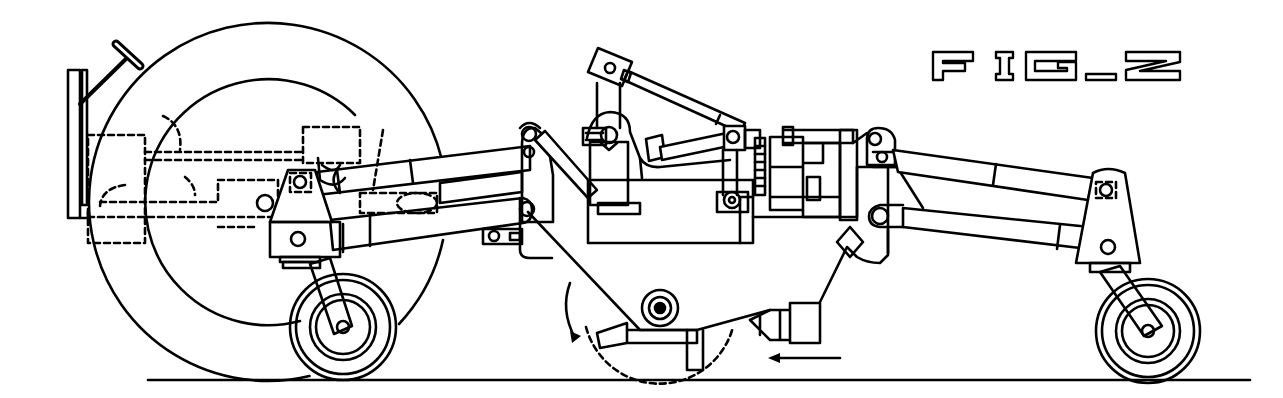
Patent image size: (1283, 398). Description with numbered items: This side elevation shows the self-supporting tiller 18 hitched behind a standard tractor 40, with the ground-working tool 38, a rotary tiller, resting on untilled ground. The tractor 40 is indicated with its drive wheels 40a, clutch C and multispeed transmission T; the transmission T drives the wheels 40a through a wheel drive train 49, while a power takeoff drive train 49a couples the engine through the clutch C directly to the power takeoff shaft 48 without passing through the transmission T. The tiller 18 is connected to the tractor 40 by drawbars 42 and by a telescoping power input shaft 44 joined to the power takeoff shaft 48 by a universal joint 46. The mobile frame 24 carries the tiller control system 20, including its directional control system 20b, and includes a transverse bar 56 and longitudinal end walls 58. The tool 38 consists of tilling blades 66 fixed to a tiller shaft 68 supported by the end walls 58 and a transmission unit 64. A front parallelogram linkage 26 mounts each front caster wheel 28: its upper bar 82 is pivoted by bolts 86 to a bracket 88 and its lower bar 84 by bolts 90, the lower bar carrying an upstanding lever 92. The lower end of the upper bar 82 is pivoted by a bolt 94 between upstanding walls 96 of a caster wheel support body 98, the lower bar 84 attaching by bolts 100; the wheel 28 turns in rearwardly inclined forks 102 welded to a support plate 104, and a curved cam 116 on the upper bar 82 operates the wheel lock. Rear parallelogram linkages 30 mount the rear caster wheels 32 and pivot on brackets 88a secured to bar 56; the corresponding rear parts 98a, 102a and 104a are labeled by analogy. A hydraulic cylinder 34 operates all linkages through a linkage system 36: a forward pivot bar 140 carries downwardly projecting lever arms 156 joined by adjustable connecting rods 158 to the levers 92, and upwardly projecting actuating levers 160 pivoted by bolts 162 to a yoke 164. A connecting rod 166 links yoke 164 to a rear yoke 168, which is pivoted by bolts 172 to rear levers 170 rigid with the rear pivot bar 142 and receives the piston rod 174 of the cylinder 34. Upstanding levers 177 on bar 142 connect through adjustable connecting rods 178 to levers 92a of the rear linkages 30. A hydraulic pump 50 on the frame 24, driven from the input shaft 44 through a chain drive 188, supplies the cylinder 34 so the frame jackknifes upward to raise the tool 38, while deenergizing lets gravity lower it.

The self-supporting tiller 18 is at (878, 127).
The tiller control system 20 is at (690, 136).
The directional control system 20b is at (334, 160).
The mobile frame 24 is at (524, 259).
The front parallelogram linkages 26 is at (462, 148).
The front caster wheels 28 is at (302, 350).
The rear parallelogram linkages 30 is at (1021, 177).
The rear caster wheels 32 is at (1190, 309).
The hydraulic cylinder 34 is at (586, 153).
The linkage system 36 is at (592, 57).
The ground-working tool 38 is at (700, 370).
The tractor 40 is at (76, 70).
The drive wheels 40a is at (303, 64).
The drawbars 42 is at (113, 186).
The power input shaft 44 is at (462, 238).
The universal joint 46 is at (420, 192).
The power takeoff shaft 48 is at (385, 149).
The wheel drive train 49 is at (173, 181).
The power takeoff drive train 49a is at (150, 123).
The hydraulic pump 50 is at (819, 129).
The transverse bar 56 is at (845, 251).
The end walls 58 is at (753, 299).
The transmission unit 64 is at (822, 327).
The tilling blades 66 is at (664, 363).
The tiller shaft 68 is at (662, 304).
The upper bar 82 is at (477, 153).
The lower bar 84 is at (410, 236).
The bolts 86 is at (524, 129).
The bracket 88 is at (552, 193).
The brackets 88a is at (878, 192).
The bolts 90 is at (547, 228).
The lever 92 is at (498, 183).
The levers 92a is at (897, 139).
The bolt 94 is at (300, 176).
The upstanding walls 96 is at (275, 231).
The front caster wheel support body 98 is at (290, 240).
The rear caster plate 98a is at (1142, 247).
The bolts 100 is at (290, 255).
The forks 102 is at (303, 297).
The rear caster fork 102a is at (1124, 299).
The horizontal support plate 104 is at (293, 263).
The rear caster swivel 104a is at (1092, 272).
The curved cam 116 is at (352, 244).
The forward pivot bar 140 is at (640, 165).
The rear pivot bar 142 is at (728, 212).
The lever arms 156 is at (623, 197).
The adjustable connecting rods 158 is at (592, 207).
The actuating levers 160 is at (597, 97).
The bolts 162 is at (620, 49).
The yoke 164 is at (636, 62).
The connecting rod 166 is at (660, 85).
The yoke 168 is at (741, 131).
The rear levers 170 is at (722, 160).
The pivot bolts 172 is at (749, 134).
The piston rod 174 is at (667, 146).
The upstanding levers 177 is at (713, 180).
The adjustable connecting rods 178 is at (836, 138).
The chain drive 188 is at (774, 190).
The clutch C is at (98, 153).
The multispeed transmission T is at (117, 243).